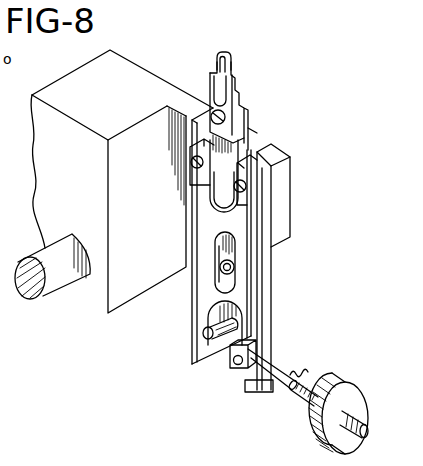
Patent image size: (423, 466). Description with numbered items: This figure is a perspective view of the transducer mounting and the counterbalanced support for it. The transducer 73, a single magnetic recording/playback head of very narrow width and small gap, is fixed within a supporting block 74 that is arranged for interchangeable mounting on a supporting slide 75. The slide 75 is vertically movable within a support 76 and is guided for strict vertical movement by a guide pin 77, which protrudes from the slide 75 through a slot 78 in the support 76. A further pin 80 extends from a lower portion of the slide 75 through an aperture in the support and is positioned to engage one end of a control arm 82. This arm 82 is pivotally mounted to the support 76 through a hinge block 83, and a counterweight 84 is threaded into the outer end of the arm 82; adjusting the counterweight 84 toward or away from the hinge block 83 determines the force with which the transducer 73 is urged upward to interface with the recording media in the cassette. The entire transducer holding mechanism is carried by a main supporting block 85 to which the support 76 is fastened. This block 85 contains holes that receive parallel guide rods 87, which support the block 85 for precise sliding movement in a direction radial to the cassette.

The transducer 73 is at (268, 37).
The supporting block 74 is at (238, 102).
The supporting slide 75 is at (235, 157).
The support 76 is at (265, 277).
The guide pin 77 is at (222, 265).
The slot 78 is at (218, 242).
The pin 80 is at (203, 333).
The control arm 82 is at (225, 357).
The hinge block 83 is at (250, 349).
The counterweight 84 is at (308, 430).
The main supporting block 85 is at (133, 80).
The guide rods 87 is at (53, 280).